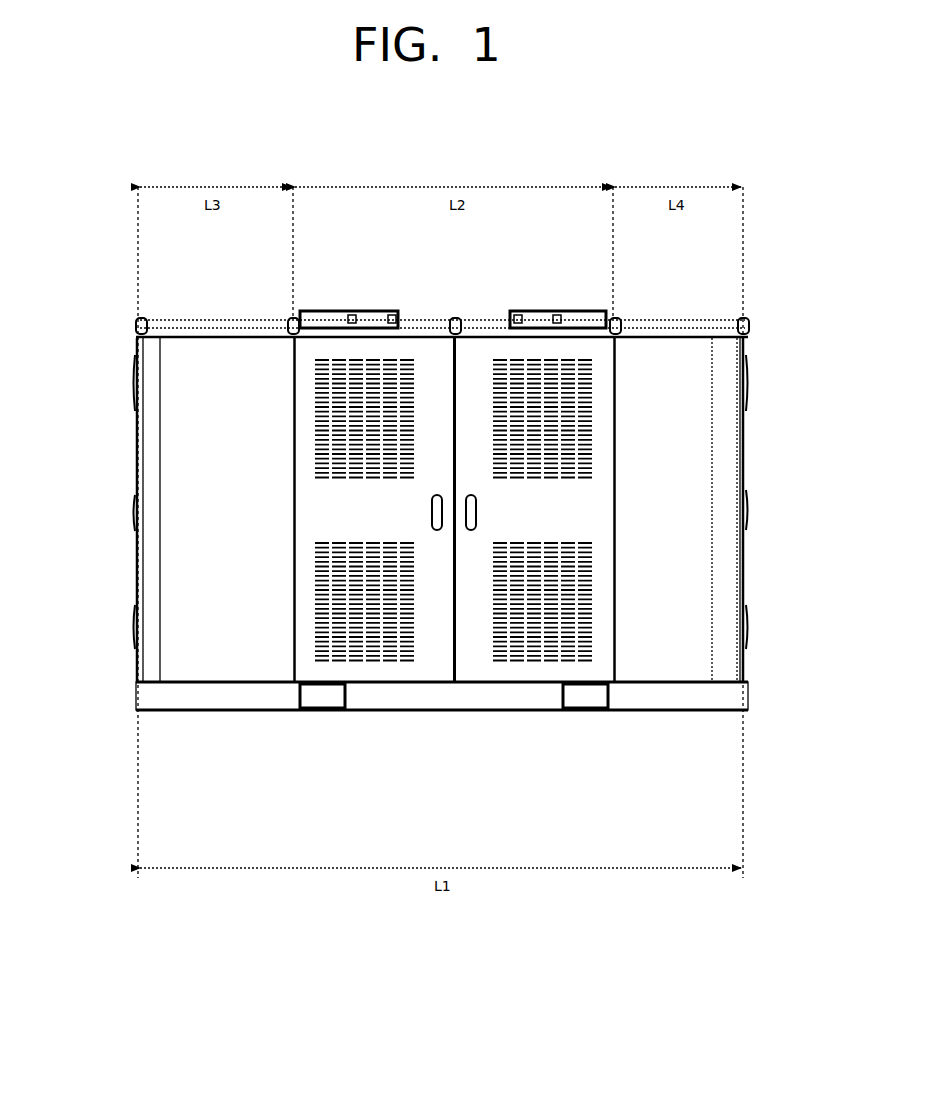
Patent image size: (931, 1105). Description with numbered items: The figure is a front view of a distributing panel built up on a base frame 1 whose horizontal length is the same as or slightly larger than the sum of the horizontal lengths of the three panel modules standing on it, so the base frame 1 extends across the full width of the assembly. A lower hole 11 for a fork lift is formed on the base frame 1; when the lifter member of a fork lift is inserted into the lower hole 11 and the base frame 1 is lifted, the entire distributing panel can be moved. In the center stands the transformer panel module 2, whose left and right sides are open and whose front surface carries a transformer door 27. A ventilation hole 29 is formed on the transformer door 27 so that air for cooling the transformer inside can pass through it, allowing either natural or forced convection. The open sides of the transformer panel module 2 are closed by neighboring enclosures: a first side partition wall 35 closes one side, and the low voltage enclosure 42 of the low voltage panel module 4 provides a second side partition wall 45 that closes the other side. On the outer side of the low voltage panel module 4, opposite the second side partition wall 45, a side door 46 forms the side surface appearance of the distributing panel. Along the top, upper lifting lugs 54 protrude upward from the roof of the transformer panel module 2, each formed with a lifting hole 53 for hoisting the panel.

The base frame 1 is at (662, 708).
The transformer panel module 2 is at (471, 655).
The low voltage panel module 4 is at (754, 630).
The lower hole for fork lift 11 is at (584, 700).
The transformer door 27 is at (432, 665).
The ventilation hole 29 is at (514, 665).
The first side partition wall 35 is at (294, 650).
The low voltage enclosure 42 is at (688, 440).
The second side partition wall 45 is at (624, 665).
The side door 46 is at (745, 556).
The lifting hole 53 is at (351, 311).
The upper lifting lug 54 is at (378, 313).